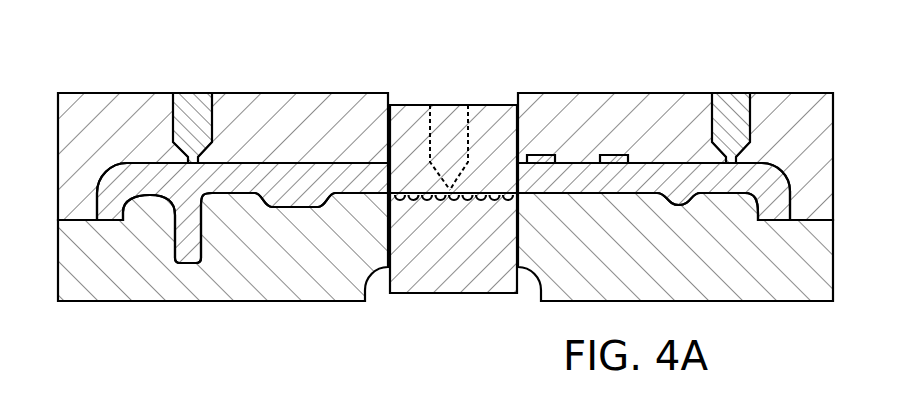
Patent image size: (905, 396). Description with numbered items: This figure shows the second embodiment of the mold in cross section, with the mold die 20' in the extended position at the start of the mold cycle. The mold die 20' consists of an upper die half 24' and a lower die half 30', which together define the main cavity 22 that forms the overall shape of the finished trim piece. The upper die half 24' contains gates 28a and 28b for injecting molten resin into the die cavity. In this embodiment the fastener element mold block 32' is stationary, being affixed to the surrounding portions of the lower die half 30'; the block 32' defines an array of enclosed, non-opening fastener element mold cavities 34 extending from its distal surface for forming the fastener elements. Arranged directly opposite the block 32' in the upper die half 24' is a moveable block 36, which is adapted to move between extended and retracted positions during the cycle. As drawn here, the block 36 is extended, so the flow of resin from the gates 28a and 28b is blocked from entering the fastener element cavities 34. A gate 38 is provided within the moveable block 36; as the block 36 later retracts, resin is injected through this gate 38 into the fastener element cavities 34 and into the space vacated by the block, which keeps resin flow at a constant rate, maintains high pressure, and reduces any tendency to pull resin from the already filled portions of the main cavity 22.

The mold die 20' is at (446, 175).
The main cavity 22 is at (792, 212).
The upper die half 24' is at (426, 156).
The gate 28a is at (197, 93).
The gate 28b is at (722, 93).
The lower die half 30' is at (426, 247).
The fastener element mold block 32' is at (461, 219).
The fastener element mold cavities 34 is at (400, 200).
The moveable block 36 is at (520, 180).
The gate 38 is at (449, 92).